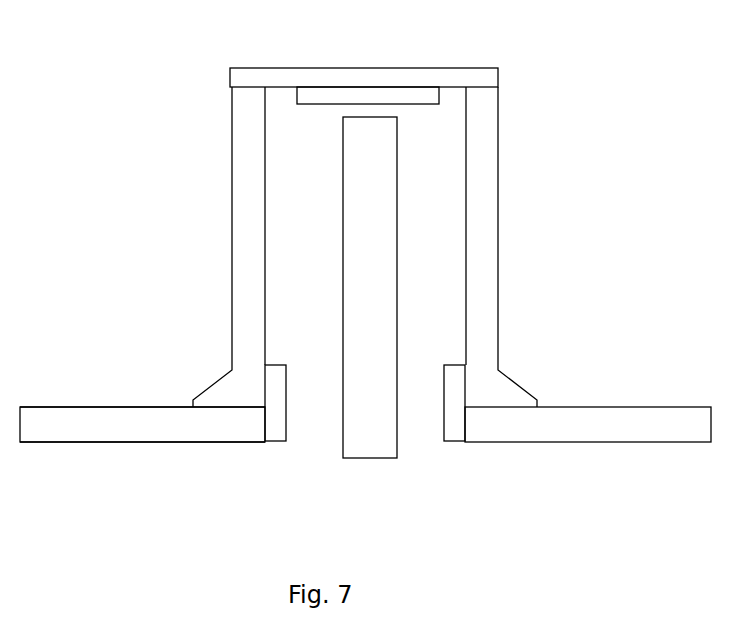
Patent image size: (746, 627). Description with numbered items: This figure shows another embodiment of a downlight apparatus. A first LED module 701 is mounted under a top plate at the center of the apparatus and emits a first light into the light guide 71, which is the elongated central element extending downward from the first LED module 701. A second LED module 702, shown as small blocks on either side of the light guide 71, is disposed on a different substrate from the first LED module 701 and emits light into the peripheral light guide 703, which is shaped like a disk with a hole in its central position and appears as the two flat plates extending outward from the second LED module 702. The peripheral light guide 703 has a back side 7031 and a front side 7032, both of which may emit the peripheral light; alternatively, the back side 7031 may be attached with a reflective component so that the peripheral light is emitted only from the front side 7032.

The first LED module 701 is at (366, 97).
The light guide 71 is at (373, 435).
The second LED module 702 is at (277, 433).
The peripheral light guide 703 is at (80, 423).
The back side 7031 is at (118, 410).
The front side 7032 is at (160, 442).